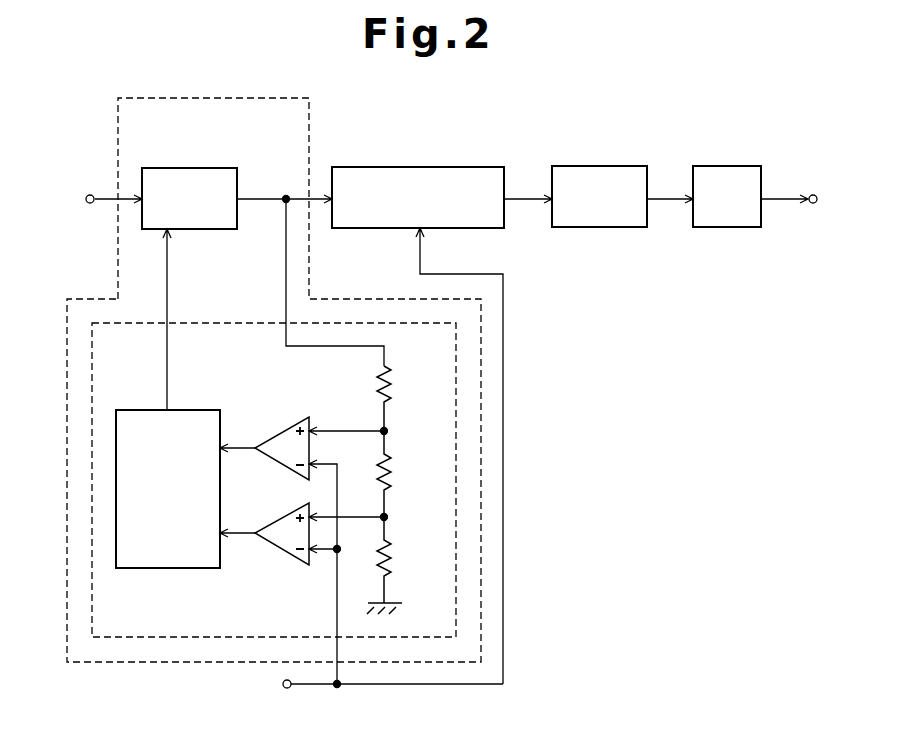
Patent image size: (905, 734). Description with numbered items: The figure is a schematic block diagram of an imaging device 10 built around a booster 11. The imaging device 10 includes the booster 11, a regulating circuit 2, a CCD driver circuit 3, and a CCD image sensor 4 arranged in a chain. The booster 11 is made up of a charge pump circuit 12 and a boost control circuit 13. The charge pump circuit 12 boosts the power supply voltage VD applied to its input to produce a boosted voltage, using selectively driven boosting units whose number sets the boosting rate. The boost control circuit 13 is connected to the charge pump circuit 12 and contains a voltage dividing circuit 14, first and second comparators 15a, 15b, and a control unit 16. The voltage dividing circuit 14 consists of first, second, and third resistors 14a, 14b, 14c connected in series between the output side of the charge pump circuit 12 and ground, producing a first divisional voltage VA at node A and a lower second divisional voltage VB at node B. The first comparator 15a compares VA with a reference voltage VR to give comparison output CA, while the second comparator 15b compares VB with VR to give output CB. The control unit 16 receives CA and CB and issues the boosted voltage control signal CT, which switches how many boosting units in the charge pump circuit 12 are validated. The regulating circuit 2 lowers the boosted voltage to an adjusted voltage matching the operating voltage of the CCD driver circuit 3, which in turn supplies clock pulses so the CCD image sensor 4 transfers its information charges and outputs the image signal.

The regulating circuit 2 is at (420, 167).
The CCD driver circuit 3 is at (600, 166).
The CCD image sensor 4 is at (725, 166).
The imaging device 10 is at (641, 294).
The booster 11 is at (93, 300).
The charge pump circuit 12 is at (190, 168).
The boost control circuit 13 is at (228, 323).
The voltage dividing circuit 14 is at (350, 394).
The first resistor 14a is at (392, 394).
The second resistor 14b is at (392, 479).
The third resistor 14c is at (392, 565).
The first comparator 15a is at (284, 426).
The second comparator 15b is at (283, 554).
The control unit 16 is at (167, 568).